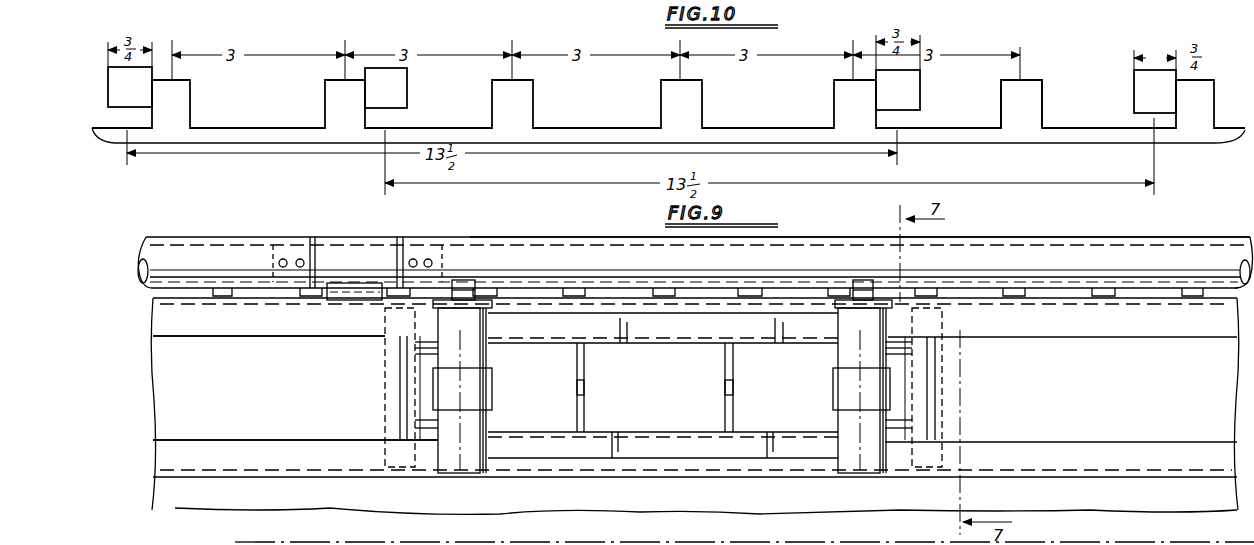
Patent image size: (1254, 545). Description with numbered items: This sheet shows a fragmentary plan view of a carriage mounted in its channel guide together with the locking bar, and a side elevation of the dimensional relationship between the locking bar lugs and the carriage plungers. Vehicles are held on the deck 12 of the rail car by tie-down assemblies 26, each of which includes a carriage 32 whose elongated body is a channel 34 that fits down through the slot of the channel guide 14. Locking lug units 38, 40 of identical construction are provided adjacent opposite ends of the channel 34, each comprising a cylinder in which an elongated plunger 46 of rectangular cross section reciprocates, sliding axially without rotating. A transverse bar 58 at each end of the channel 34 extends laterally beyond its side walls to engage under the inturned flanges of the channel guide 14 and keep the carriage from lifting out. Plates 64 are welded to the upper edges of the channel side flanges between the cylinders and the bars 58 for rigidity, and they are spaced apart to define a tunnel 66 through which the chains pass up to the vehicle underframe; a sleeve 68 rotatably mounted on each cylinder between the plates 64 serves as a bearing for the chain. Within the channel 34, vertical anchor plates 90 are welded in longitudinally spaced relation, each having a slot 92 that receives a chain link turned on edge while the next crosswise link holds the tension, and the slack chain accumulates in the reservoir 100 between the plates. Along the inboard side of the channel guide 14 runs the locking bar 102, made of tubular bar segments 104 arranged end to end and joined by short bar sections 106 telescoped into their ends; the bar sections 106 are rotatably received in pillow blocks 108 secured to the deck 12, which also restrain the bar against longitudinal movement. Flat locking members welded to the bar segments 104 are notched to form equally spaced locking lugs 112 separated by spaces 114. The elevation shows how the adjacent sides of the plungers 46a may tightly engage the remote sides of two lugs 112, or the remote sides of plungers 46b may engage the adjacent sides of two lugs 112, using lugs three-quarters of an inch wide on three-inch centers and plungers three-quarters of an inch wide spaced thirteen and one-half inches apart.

In FIG. 9, the deck 12 is at (1094, 500).
In FIG. 9, the channel guide 14 is at (1172, 420).
In FIG. 9, the tie-down assembly 26 is at (350, 394).
In FIG. 9, the carriage 32 is at (385, 428).
In FIG. 9, the channel 34 is at (748, 443).
In FIG. 9, the locking lug unit 38 is at (865, 455).
In FIG. 9, the locking lug unit 40 is at (472, 478).
In FIG. 9, the plunger 46 is at (467, 280).
In FIG. 10, the plunger 46a is at (120, 95).
In FIG. 10, the plunger 46b is at (398, 92).
In FIG. 9, the transverse bar 58 is at (386, 372).
In FIG. 9, the plate 64 is at (408, 350).
In FIG. 9, the tunnel 66 is at (420, 393).
In FIG. 9, the sleeve 68 is at (486, 392).
In FIG. 9, the anchor plate 90 is at (590, 363).
In FIG. 9, the slot 92 is at (583, 388).
In FIG. 9, the reservoir 100 is at (683, 412).
In FIG. 9, the locking bar 102 is at (1158, 233).
In FIG. 9, the tubular bar segment 104 is at (1066, 258).
In FIG. 9, the bar section 106 is at (432, 255).
In FIG. 9, the pillow block 108 is at (356, 241).
In FIG. 10, the locking lug 112 is at (1035, 95).
In FIG. 10, the space 114 is at (600, 125).